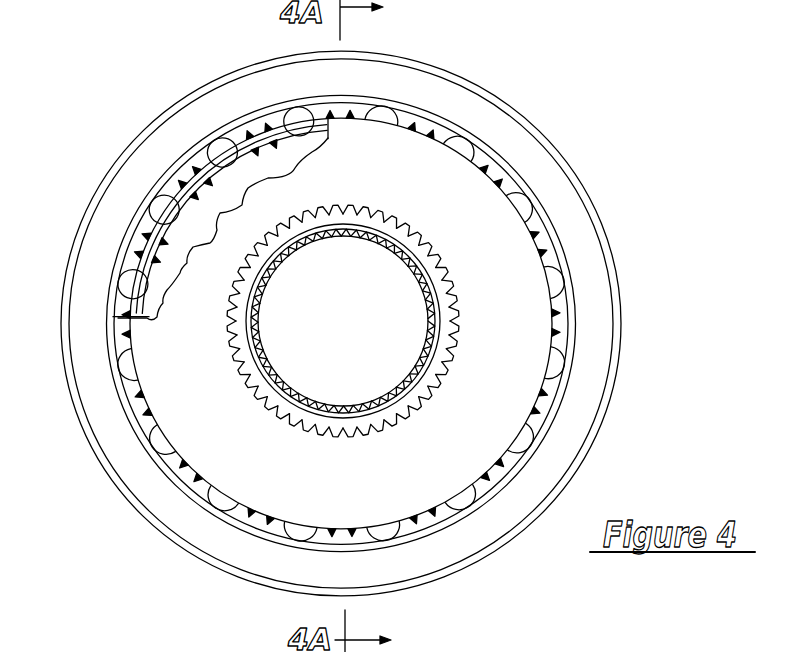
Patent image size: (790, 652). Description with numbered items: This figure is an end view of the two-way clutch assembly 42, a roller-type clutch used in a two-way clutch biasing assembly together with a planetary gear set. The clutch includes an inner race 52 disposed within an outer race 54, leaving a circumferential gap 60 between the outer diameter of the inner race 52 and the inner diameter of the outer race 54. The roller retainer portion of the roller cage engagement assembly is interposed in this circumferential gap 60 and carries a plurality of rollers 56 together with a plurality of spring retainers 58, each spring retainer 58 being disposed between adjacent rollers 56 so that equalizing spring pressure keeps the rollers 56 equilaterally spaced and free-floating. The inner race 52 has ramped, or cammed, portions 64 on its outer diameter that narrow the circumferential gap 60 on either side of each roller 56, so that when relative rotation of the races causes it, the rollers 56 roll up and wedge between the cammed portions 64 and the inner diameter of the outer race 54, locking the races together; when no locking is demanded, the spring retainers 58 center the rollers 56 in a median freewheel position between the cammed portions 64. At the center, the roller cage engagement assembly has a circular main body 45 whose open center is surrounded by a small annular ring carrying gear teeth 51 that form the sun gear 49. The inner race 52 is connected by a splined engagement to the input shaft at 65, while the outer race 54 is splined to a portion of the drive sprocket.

The two-way clutch assembly 42 is at (80, 646).
The main body 45 is at (475, 228).
The sun gear 49 is at (432, 387).
The gear teeth 51 is at (448, 289).
The inner race 52 is at (170, 250).
The outer race 54 is at (562, 152).
The rollers 56 is at (218, 140).
The spring retainers 58 is at (258, 132).
The circumferential gap 60 is at (180, 167).
The cammed portions 64 is at (248, 203).
The splined engagement 65 is at (420, 335).